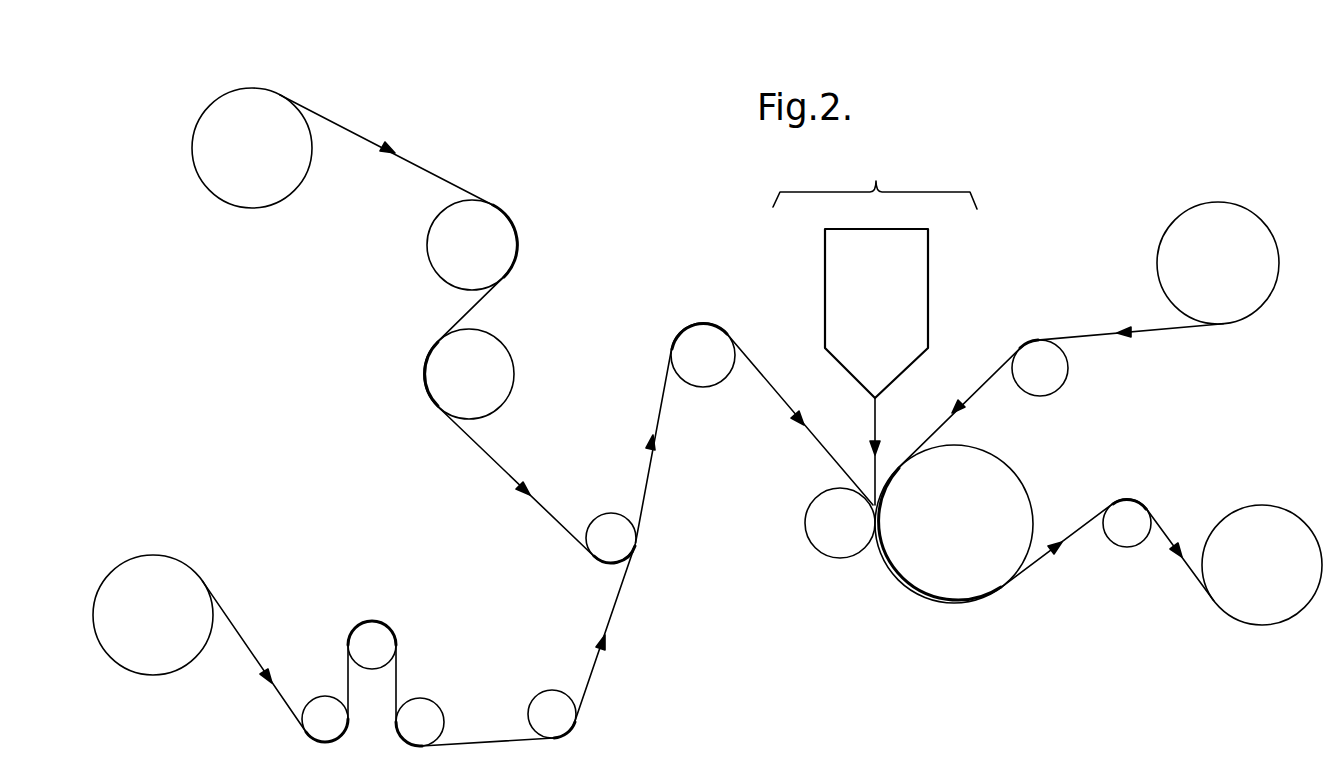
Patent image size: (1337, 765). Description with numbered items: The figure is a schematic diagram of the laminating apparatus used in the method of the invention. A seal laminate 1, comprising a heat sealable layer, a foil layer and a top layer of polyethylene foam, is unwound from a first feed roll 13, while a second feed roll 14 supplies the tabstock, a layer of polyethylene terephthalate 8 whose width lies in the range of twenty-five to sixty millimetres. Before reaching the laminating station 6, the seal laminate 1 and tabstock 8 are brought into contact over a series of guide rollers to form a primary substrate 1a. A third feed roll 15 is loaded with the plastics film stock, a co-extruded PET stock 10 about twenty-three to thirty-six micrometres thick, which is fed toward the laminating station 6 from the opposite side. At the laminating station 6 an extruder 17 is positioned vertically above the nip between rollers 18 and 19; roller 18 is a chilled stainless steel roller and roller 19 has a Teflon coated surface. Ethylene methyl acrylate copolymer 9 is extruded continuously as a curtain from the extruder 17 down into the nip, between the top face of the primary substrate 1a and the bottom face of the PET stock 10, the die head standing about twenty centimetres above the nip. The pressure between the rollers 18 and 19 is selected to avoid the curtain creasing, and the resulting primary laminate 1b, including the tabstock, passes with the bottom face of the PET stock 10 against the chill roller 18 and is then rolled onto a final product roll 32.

The second feed roll 14 is at (270, 98).
The tabstock 8 is at (412, 160).
The first feed roll 13 is at (153, 663).
The seal laminate 1 is at (237, 627).
The primary substrate 1a is at (648, 464).
The laminating station 6 is at (876, 330).
The extruder 17 is at (929, 285).
The ethylene methyl acrylate copolymer 9 is at (873, 413).
The chilled stainless steel roller 18 is at (957, 593).
The roller 19 is at (817, 525).
The third feed roll 15 is at (1258, 222).
The PET stock 10 is at (1110, 337).
The primary laminate 1b is at (1158, 522).
The final product roll 32 is at (1272, 612).